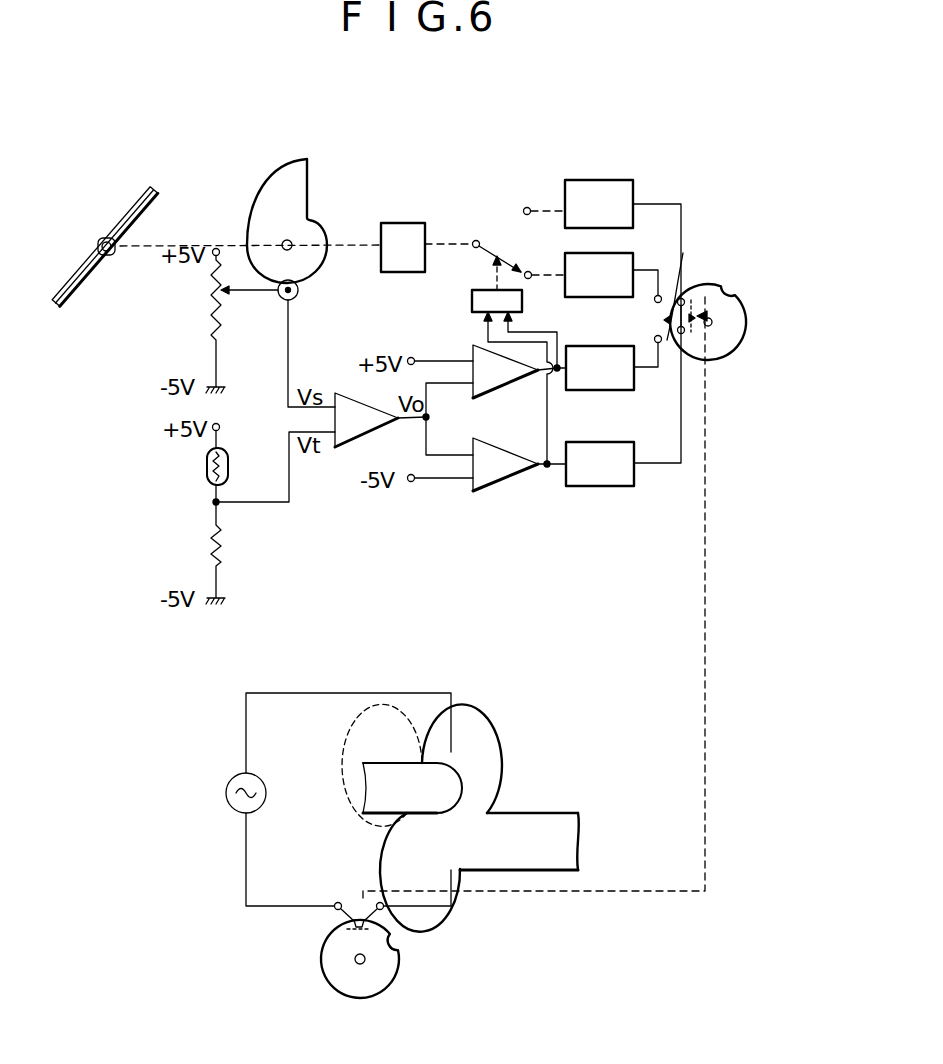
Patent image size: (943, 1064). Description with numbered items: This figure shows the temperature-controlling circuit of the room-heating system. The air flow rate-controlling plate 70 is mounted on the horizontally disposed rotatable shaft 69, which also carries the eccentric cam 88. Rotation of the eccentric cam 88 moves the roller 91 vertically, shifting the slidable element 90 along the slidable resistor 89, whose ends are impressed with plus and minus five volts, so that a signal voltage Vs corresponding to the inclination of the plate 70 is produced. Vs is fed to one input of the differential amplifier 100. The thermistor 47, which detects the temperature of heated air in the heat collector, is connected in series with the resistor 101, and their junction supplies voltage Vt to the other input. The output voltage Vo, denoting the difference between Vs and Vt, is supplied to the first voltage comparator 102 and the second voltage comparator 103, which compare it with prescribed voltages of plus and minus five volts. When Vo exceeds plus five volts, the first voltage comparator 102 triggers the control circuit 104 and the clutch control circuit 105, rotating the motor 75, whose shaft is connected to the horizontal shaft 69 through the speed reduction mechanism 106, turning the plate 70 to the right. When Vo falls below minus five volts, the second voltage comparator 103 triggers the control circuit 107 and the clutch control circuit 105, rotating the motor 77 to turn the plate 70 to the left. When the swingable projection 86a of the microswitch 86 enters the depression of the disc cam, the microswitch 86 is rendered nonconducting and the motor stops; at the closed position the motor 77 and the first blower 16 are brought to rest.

The first blower 16 is at (440, 780).
The thermistor 47 is at (207, 470).
The horizontally disposed rotatable shaft 69 is at (112, 252).
The air flow rate-controlling plate 70 is at (118, 223).
The motor 75 is at (580, 286).
The motor 77 is at (594, 190).
The microswitch 86 is at (665, 320).
The swingable projection 86a is at (683, 253).
The eccentric cam 88 is at (305, 182).
The slidable resistor 89 is at (213, 318).
The slidable element 90 is at (250, 291).
The roller 91 is at (298, 290).
The differential amplifier 100 is at (378, 432).
The resistor 101 is at (222, 540).
The first voltage comparator 102 is at (498, 382).
The second voltage comparator 103 is at (498, 482).
The control circuit 104 is at (598, 380).
The clutch control circuit 105 is at (478, 300).
The speed reduction mechanism 106 is at (405, 232).
The control circuit 107 is at (603, 478).